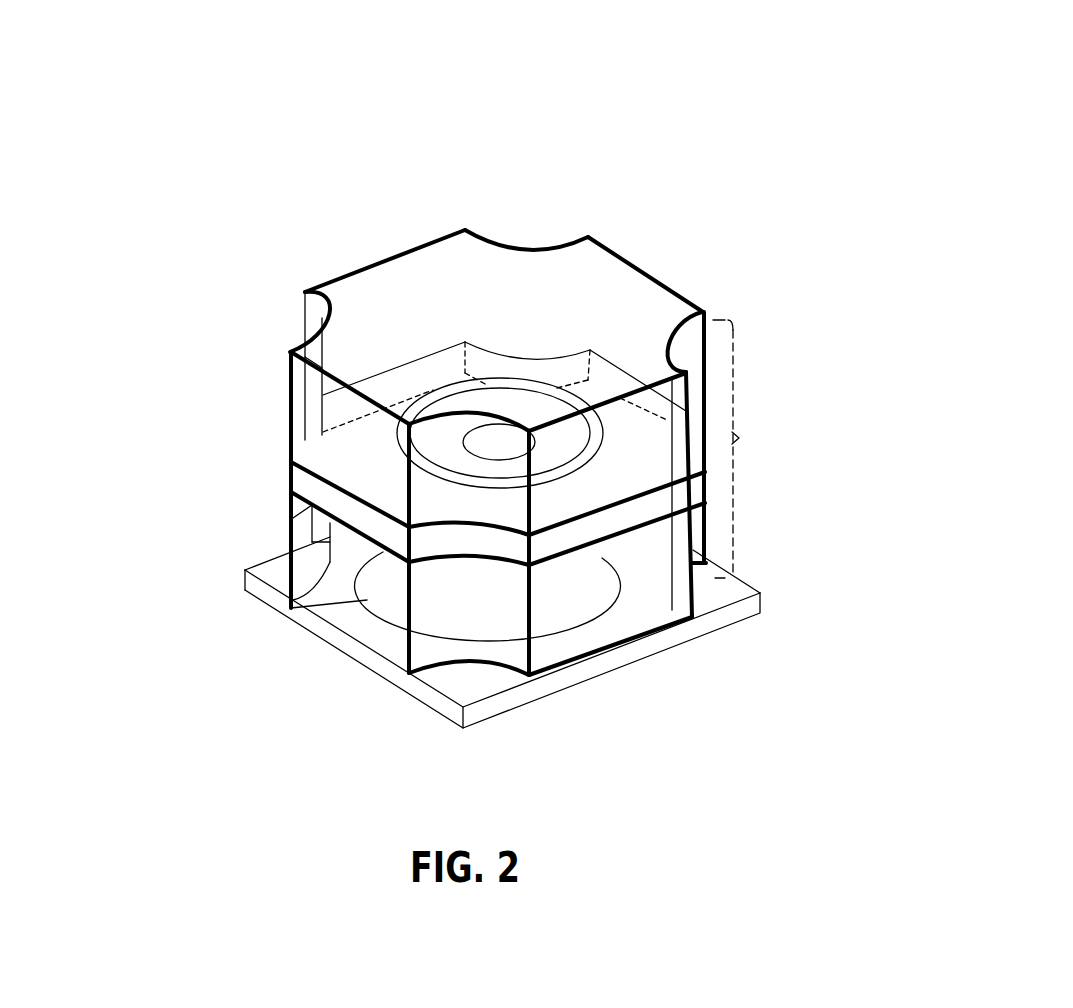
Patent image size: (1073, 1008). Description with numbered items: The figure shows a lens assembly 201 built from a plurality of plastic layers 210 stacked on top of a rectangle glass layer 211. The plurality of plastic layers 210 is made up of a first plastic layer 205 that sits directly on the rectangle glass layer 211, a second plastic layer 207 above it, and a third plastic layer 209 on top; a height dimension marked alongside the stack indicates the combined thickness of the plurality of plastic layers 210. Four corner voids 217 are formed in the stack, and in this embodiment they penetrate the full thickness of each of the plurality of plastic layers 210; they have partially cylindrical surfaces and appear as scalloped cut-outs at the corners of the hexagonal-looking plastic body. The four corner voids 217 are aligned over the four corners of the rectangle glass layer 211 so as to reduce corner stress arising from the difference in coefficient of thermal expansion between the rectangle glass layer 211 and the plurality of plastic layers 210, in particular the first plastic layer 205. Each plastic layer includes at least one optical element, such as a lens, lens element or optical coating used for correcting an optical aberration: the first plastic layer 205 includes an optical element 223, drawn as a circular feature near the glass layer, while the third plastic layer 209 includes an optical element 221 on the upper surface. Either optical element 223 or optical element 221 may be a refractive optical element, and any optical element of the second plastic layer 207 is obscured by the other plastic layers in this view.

The lens assembly 201 is at (1022, 62).
The first plastic layer 205 is at (291, 520).
The second plastic layer 207 is at (291, 478).
The third plastic layer 209 is at (283, 390).
The plurality of plastic layers 210 is at (754, 449).
The rectangle glass layer 211 is at (708, 628).
The corner voids 217 is at (264, 300).
The optical element 221 is at (453, 383).
The optical element 223 is at (296, 607).